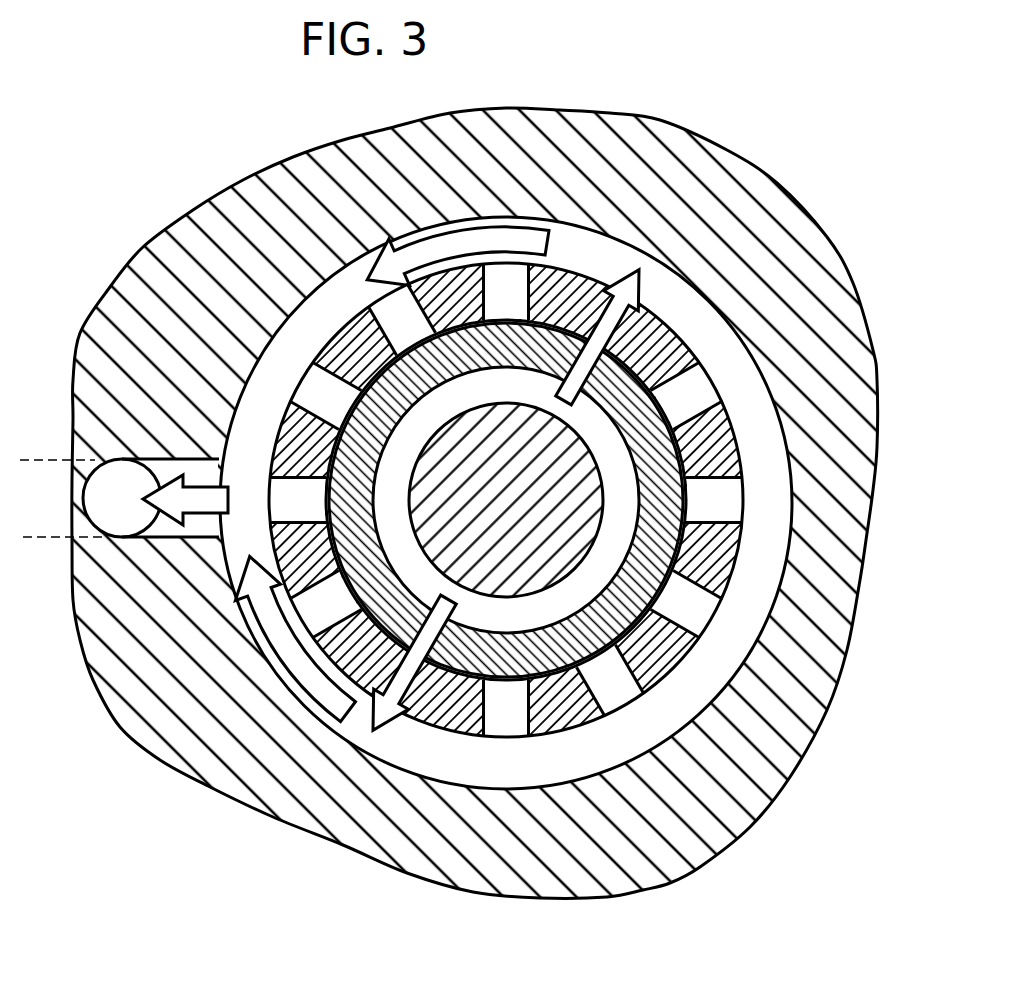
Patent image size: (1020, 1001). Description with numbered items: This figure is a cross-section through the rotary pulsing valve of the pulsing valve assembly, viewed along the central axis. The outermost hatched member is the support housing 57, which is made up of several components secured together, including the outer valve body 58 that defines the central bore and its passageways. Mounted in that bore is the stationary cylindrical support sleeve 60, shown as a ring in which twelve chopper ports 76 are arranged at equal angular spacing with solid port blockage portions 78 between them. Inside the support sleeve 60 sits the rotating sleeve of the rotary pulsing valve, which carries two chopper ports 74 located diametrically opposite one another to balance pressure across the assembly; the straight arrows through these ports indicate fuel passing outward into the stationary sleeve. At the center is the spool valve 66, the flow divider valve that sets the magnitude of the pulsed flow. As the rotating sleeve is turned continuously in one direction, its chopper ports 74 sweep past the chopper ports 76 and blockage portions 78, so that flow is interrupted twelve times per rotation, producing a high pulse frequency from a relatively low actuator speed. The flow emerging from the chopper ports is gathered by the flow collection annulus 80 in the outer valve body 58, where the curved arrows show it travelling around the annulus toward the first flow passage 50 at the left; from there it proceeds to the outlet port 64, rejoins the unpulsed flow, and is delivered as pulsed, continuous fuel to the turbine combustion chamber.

The first flow passage 50 is at (197, 458).
The support housing 57 is at (193, 210).
The outer valve body 58 is at (293, 163).
The cylindrical support sleeve 60 is at (600, 506).
The outlet port 64 is at (50, 495).
The spool valve 66 is at (485, 573).
The chopper port 74 is at (663, 317).
The chopper port 76 is at (732, 513).
The solid port blockage portion 78 is at (715, 557).
The flow collection annulus 80 is at (682, 297).